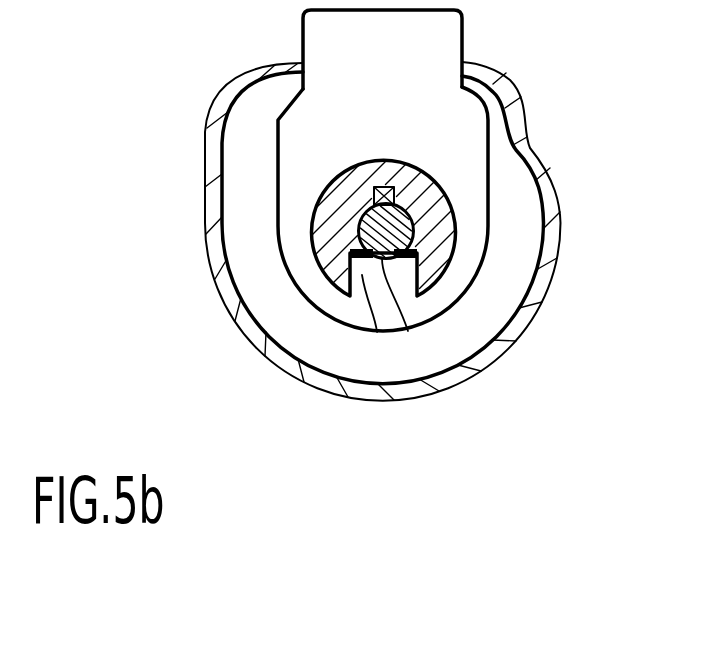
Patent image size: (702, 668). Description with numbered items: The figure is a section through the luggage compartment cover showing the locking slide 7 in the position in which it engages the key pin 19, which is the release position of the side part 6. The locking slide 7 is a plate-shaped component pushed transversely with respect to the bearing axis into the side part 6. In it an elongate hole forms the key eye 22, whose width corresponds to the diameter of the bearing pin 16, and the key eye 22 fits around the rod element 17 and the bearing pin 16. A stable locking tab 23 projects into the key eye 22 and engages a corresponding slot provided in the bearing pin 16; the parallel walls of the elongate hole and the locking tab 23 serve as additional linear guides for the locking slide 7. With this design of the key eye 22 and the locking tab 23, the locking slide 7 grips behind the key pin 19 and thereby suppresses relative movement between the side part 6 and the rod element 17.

The side part 6 is at (512, 88).
The locking slide 7 is at (445, 37).
The bearing pin 16 is at (437, 253).
The rod element 17 is at (350, 258).
The key pin 19 is at (395, 186).
The key eye 22 is at (418, 152).
The locking tab 23 is at (364, 292).